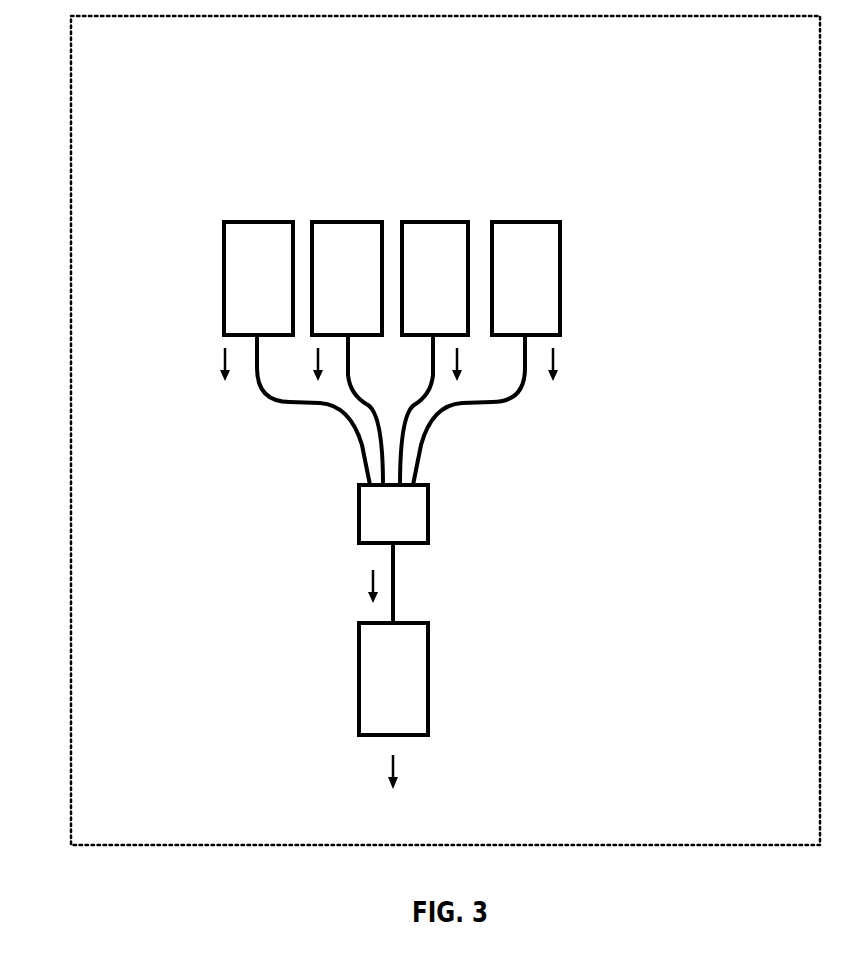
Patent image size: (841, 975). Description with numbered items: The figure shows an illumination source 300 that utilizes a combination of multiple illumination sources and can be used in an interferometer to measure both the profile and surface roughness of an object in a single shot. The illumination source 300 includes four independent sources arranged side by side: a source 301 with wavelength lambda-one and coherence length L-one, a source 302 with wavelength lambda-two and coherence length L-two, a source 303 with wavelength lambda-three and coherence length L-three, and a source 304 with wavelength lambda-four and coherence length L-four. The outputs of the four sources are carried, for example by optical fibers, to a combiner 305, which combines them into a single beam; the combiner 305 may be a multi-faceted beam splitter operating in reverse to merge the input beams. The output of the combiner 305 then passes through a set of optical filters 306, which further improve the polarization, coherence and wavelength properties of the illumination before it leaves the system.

The illumination source 300 is at (445, 430).
The source 301 is at (256, 222).
The source 302 is at (345, 222).
The source 303 is at (433, 222).
The source 304 is at (532, 222).
The combiner 305 is at (428, 515).
The set of optical filters 306 is at (428, 680).